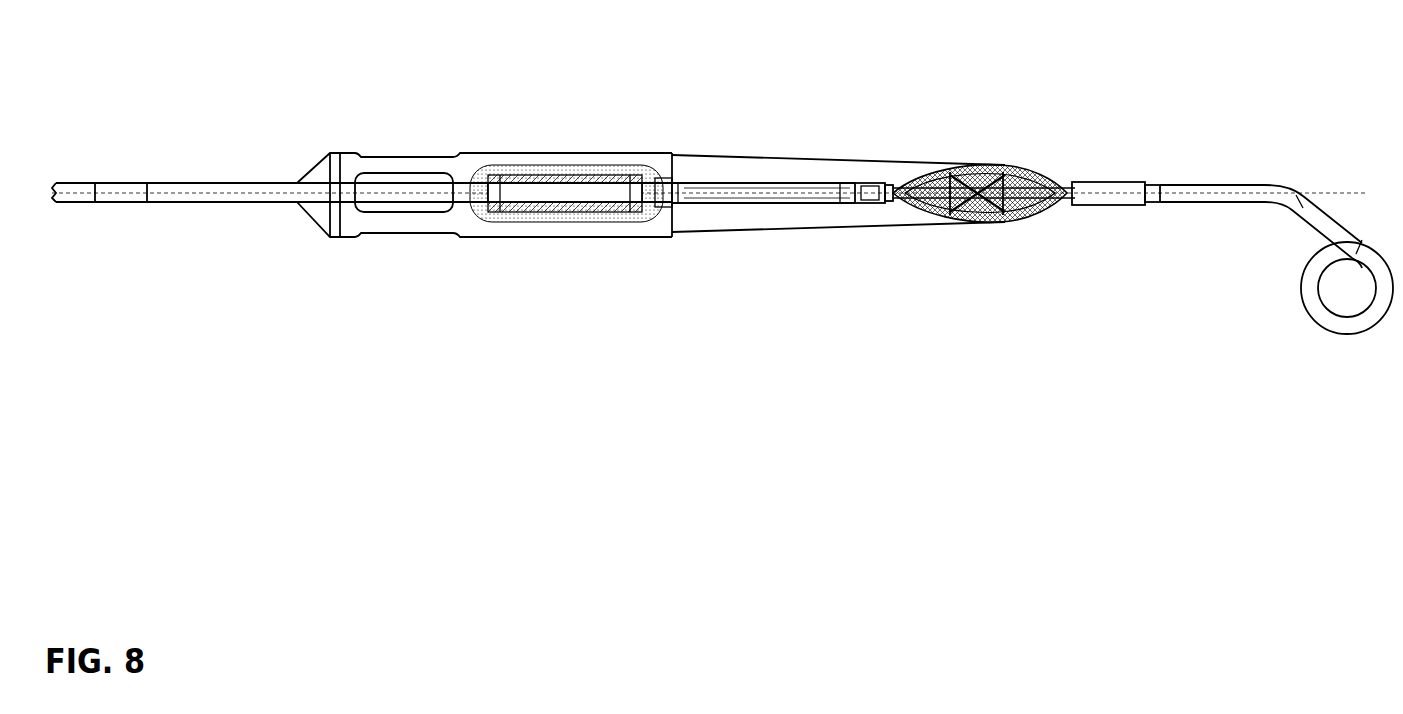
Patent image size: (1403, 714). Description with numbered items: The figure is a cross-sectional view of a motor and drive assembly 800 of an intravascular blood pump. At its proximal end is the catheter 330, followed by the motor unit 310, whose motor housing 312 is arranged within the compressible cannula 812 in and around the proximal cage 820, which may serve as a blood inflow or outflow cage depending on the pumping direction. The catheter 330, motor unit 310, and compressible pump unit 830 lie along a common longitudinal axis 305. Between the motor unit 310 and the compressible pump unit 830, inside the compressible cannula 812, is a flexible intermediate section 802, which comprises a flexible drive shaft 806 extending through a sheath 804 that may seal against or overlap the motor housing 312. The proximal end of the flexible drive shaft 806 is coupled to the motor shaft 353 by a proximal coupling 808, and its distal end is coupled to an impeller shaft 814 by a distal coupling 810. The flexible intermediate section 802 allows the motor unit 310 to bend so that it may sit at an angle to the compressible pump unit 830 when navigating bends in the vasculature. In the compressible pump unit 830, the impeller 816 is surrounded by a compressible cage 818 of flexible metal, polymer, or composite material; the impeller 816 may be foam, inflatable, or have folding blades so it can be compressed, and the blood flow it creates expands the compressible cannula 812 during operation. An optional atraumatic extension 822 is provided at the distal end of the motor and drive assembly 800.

The motor and drive assembly 800 is at (203, 593).
The catheter 330 is at (100, 185).
The motor unit 310 is at (670, 62).
The proximal cage 820 is at (405, 180).
The motor housing 312 is at (516, 165).
The motor shaft 353 is at (664, 183).
The flexible intermediate section 802 is at (887, 62).
The flexible drive shaft 806 is at (757, 183).
The sheath 804 is at (815, 183).
The proximal coupling 808 is at (690, 205).
The distal coupling 810 is at (848, 205).
The compressible cannula 812 is at (887, 183).
The compressible pump unit 830 is at (1070, 62).
The impeller shaft 814 is at (947, 170).
The impeller 816 is at (1000, 173).
The compressible cage 818 is at (1040, 170).
The common longitudinal axis 305 is at (1117, 193).
The atraumatic extension 822 is at (1280, 185).